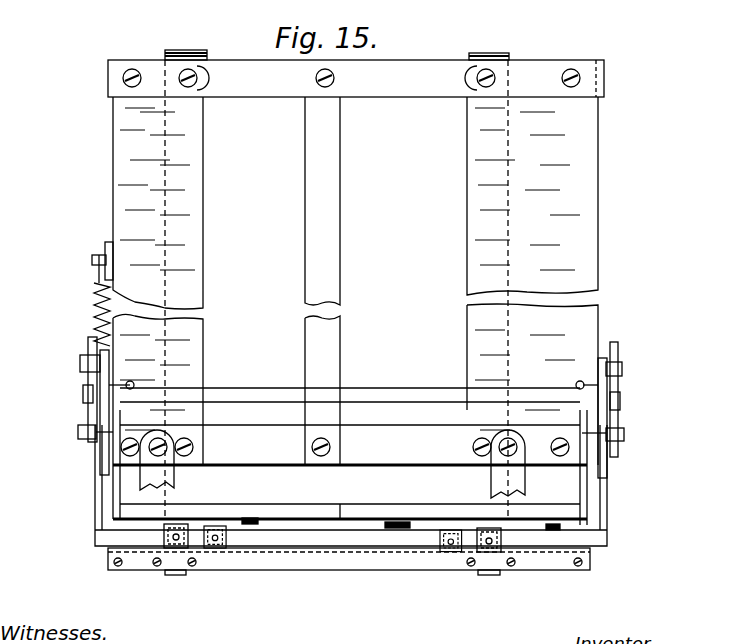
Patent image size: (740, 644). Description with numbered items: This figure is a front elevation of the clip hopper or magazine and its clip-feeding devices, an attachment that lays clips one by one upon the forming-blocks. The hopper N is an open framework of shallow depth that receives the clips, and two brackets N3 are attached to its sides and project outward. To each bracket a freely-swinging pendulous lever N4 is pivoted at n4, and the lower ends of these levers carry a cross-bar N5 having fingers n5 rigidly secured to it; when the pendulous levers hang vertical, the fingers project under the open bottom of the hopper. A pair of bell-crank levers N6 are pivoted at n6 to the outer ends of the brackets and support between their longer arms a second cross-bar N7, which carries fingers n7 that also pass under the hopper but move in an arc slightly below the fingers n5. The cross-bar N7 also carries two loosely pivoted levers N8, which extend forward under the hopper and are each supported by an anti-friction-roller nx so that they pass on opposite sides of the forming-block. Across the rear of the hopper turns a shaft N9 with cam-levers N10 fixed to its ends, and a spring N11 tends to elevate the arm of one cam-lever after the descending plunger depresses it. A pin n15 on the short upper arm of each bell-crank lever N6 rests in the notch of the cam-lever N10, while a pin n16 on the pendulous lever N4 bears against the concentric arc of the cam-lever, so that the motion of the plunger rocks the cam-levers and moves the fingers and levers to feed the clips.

The hopper N is at (205, 160).
The bracket N3 is at (108, 378).
The pendulous lever N4 is at (115, 487).
The cross-bar N5 is at (345, 517).
The bell-crank lever N6 is at (95, 488).
The cross-bar N7 is at (337, 547).
The lever N8 is at (160, 550).
The shaft N9 is at (405, 396).
The cam-lever N10 is at (88, 347).
The spring N11 is at (96, 302).
The pivot n4 is at (134, 384).
The finger n5 is at (251, 517).
The pivot n6 is at (88, 400).
The finger n7 is at (217, 550).
The pin n15 is at (80, 364).
The pin n16 is at (82, 433).
The anti-friction-roller nx is at (177, 576).